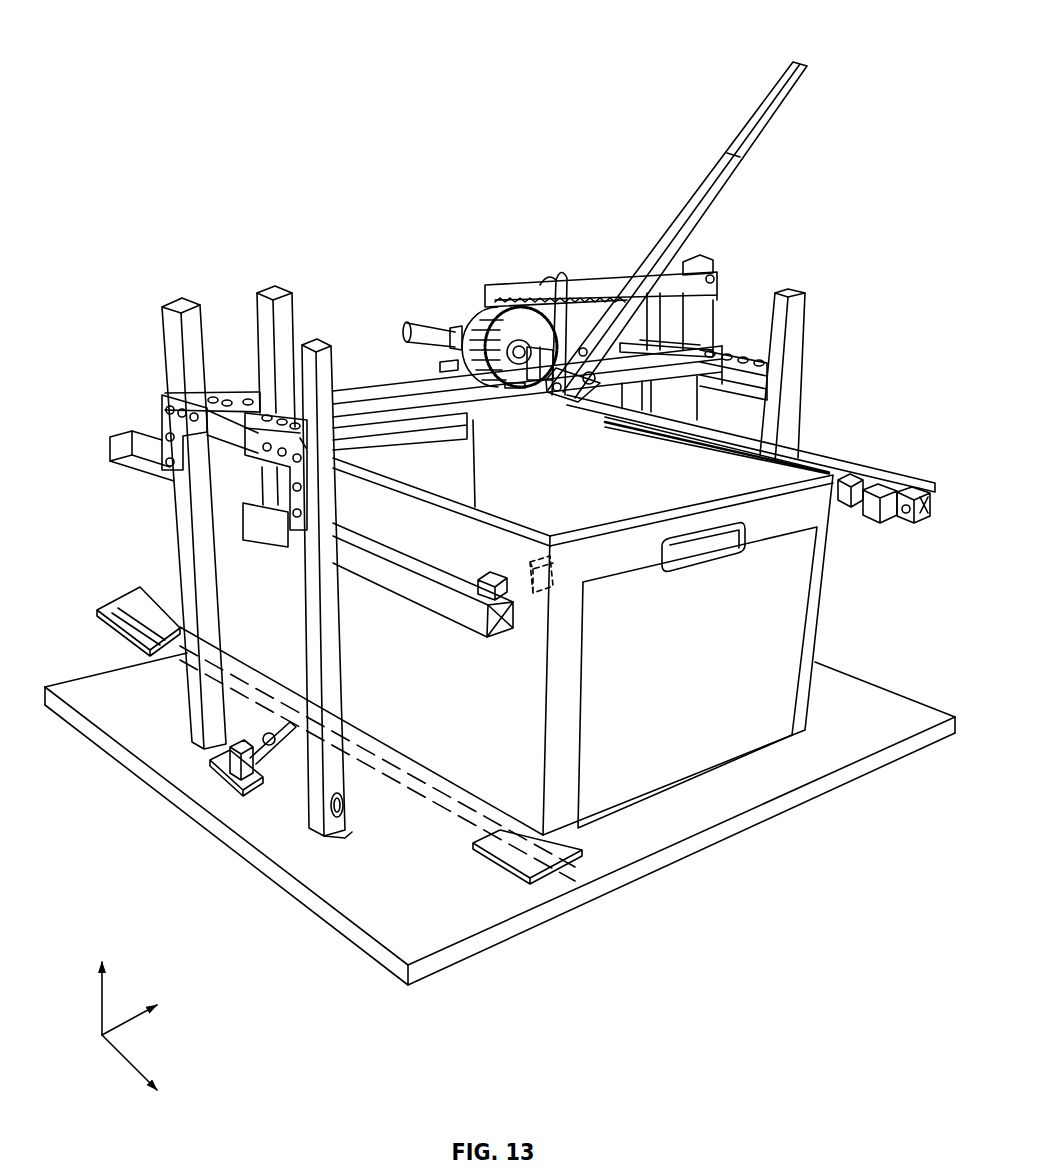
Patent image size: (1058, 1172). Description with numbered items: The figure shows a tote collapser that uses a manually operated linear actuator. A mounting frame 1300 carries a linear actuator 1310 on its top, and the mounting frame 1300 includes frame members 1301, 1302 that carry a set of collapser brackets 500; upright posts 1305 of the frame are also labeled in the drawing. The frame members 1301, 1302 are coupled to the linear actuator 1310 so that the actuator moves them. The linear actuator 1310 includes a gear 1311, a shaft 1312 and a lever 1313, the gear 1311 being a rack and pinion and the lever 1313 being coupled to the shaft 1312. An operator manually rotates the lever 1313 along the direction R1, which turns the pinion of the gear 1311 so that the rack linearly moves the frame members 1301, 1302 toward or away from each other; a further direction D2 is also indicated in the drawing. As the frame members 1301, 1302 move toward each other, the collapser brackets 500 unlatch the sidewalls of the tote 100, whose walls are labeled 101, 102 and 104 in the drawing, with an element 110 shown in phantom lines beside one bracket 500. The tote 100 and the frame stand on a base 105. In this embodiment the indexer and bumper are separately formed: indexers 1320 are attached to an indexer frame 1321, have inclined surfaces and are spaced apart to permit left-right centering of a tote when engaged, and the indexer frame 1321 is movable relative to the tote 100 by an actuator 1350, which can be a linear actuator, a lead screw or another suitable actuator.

The tote 100 is at (555, 605).
The front wall of container 101 is at (684, 691).
The side wall of container 102 is at (360, 662).
The back wall of container 104 is at (549, 459).
The base plate 105 is at (640, 797).
The marker block 110 is at (546, 559).
The collapser brackets 500 is at (498, 568).
The mounting frame 1300 is at (633, 112).
The frame member 1301 is at (466, 625).
The frame member 1302 is at (829, 460).
The frame 1305 is at (802, 285).
The linear actuator 1310 is at (623, 232).
The gear 1311 is at (473, 322).
The shaft 1312 is at (598, 278).
The lever 1313 is at (790, 108).
The indexers 1320 is at (118, 620).
The indexer frame 1321 is at (437, 802).
The actuator 1350 is at (275, 755).
The direction R1 is at (790, 45).
The translation direction D2 is at (915, 554).